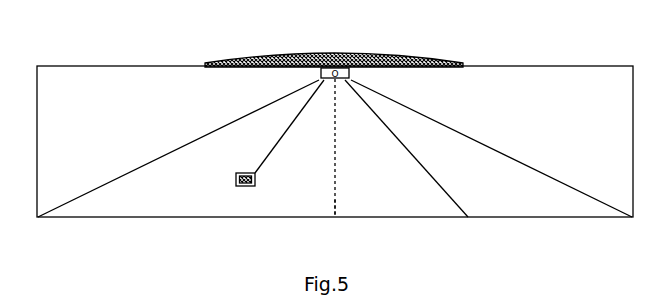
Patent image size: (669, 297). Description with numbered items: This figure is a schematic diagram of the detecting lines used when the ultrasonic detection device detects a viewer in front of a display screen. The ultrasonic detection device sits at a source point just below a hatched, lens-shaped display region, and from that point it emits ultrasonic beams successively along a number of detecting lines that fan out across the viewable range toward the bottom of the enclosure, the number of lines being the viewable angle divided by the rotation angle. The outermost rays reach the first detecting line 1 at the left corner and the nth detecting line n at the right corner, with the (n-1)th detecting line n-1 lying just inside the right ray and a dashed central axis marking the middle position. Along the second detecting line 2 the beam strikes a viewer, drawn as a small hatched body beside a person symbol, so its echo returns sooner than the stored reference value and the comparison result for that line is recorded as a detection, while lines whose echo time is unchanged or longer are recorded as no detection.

The first detecting line 1 is at (178, 160).
The second detecting line 2 is at (265, 160).
The (n-1)th detecting line n-1 is at (417, 160).
The nth detecting line n is at (497, 160).